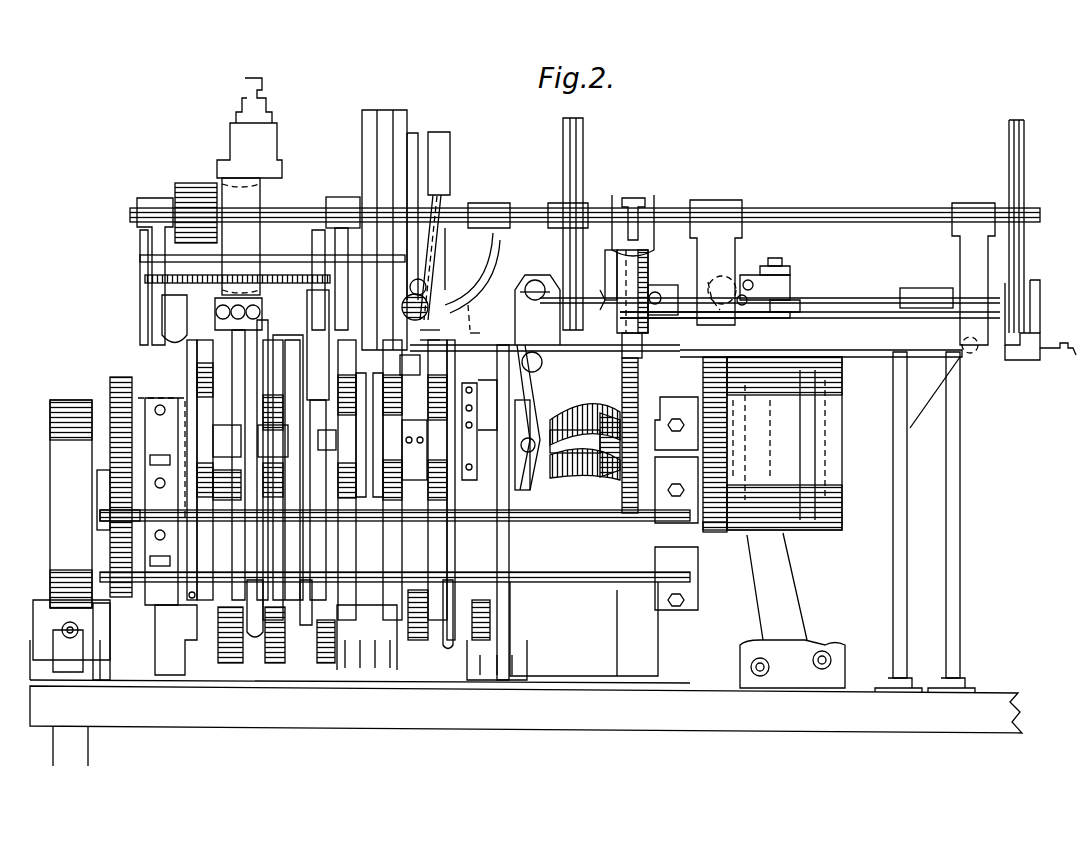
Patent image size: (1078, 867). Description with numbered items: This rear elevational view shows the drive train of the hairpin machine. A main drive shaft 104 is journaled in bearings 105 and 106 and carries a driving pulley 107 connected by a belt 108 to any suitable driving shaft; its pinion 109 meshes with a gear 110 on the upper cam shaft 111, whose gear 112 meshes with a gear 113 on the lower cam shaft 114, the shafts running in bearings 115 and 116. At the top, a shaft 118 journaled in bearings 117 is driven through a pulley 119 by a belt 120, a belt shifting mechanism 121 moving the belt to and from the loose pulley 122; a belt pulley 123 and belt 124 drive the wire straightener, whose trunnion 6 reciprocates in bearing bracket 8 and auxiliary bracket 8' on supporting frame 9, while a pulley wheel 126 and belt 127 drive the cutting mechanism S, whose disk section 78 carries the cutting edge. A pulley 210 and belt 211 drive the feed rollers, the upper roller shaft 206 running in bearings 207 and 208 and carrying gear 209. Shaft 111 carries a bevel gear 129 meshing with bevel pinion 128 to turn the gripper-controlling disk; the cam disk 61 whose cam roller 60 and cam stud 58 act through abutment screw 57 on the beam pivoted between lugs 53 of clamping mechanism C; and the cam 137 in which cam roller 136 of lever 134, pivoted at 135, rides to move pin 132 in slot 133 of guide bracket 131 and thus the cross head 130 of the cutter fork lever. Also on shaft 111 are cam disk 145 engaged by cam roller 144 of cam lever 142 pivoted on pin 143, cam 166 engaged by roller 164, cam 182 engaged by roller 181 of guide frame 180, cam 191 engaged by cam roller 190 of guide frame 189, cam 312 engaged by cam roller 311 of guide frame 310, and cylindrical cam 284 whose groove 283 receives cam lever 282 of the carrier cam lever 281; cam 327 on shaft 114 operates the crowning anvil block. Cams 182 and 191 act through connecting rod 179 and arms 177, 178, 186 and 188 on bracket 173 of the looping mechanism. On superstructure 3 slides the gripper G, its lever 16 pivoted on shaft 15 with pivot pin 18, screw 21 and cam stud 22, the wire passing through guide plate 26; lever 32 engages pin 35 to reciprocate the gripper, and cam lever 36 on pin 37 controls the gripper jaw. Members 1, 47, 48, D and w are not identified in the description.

The base plate 1 is at (526, 723).
The superstructure 3 is at (625, 628).
The trunnion shaft 6 is at (914, 290).
The bearing bracket 8 is at (1040, 297).
The auxiliary bracket 8' is at (1047, 294).
The supporting frame 9 is at (1043, 350).
The transverse pivot shaft 15 is at (758, 295).
The lever 16 is at (765, 273).
The pivot pin 18 is at (722, 272).
The vertical screw 21 is at (788, 266).
The cam stud 22 is at (795, 292).
The guide plate 26 is at (705, 283).
The lever 32 is at (780, 560).
The pin 35 is at (728, 300).
The cam lever 36 is at (840, 405).
The pin 37 is at (965, 362).
The pin 47 is at (660, 298).
The lug 48 is at (594, 308).
The lug 53 is at (660, 215).
The adjustable abutment screw 57 is at (640, 205).
The cam stud 58 is at (640, 248).
The cam roller 60 is at (645, 345).
The cam disk 61 is at (622, 522).
The disk section 78 is at (490, 262).
The main drive shaft 104 is at (552, 522).
The bearing 105 is at (162, 501).
The bearing 106 is at (676, 490).
The driving pulley 107 is at (100, 514).
The belt 108 is at (62, 458).
The pinion 109 is at (720, 539).
The gear 110 is at (735, 443).
The upper cam shaft 111 is at (574, 418).
The gear 112 is at (112, 392).
The gear 113 is at (110, 572).
The lower cam shaft 114 is at (554, 583).
The bearing 115 is at (418, 458).
The bearing 116 is at (423, 578).
The bearing 117 is at (137, 210).
The shaft 118 is at (826, 210).
The pulley 119 is at (275, 190).
The belt 120 is at (241, 236).
The belt shifting mechanism 121 is at (215, 255).
The loose pulley 122 is at (185, 198).
The belt pulley 123 is at (1024, 178).
The belt 124 is at (1024, 150).
The pulley wheel 126 is at (583, 166).
The belt 127 is at (583, 144).
The bevel pinion 128 is at (585, 418).
The bevel gear 129 is at (606, 456).
The cross head 130 is at (604, 275).
The guide bracket 131 is at (520, 272).
The pin 132 is at (541, 278).
The slot 133 is at (521, 278).
The lever 134 is at (548, 410).
The pivot 135 is at (550, 402).
The cam roller 136 is at (585, 476).
The cam 137 is at (524, 453).
The cam lever 142 is at (396, 359).
The pin 143 is at (479, 415).
The cam roller 144 is at (414, 450).
The cam disk 145 is at (407, 480).
The cam roller 164 is at (328, 437).
The cam 166 is at (368, 435).
The bracket 173 is at (419, 216).
The arm 177 is at (382, 140).
The arm 178 is at (436, 132).
The connecting rod 179 is at (445, 200).
The guide frame 180 is at (467, 635).
The roller 181 is at (441, 490).
The cam 182 is at (422, 480).
The arm 186 is at (360, 180).
The arm 188 is at (318, 240).
The guide frame 189 is at (325, 445).
The cam roller 190 is at (283, 480).
The cam 191 is at (332, 480).
The shaft 206 is at (395, 299).
The bearing 207 is at (445, 318).
The bearing 208 is at (445, 330).
The gear 209 is at (394, 279).
The pulley 210 is at (459, 252).
The belt 211 is at (462, 259).
The cam lever 281 is at (835, 352).
The cam lever 282 is at (843, 375).
The cam groove 283 is at (843, 490).
The cylindrical cam 284 is at (835, 460).
The guide frame 310 is at (200, 392).
The cam roller 311 is at (209, 470).
The cam 312 is at (230, 462).
The cam 327 is at (280, 620).
The clamping mechanism C is at (663, 288).
The pawl D is at (493, 328).
The gripper G is at (779, 253).
The cutting mechanism S is at (492, 317).
The rod w is at (770, 301).